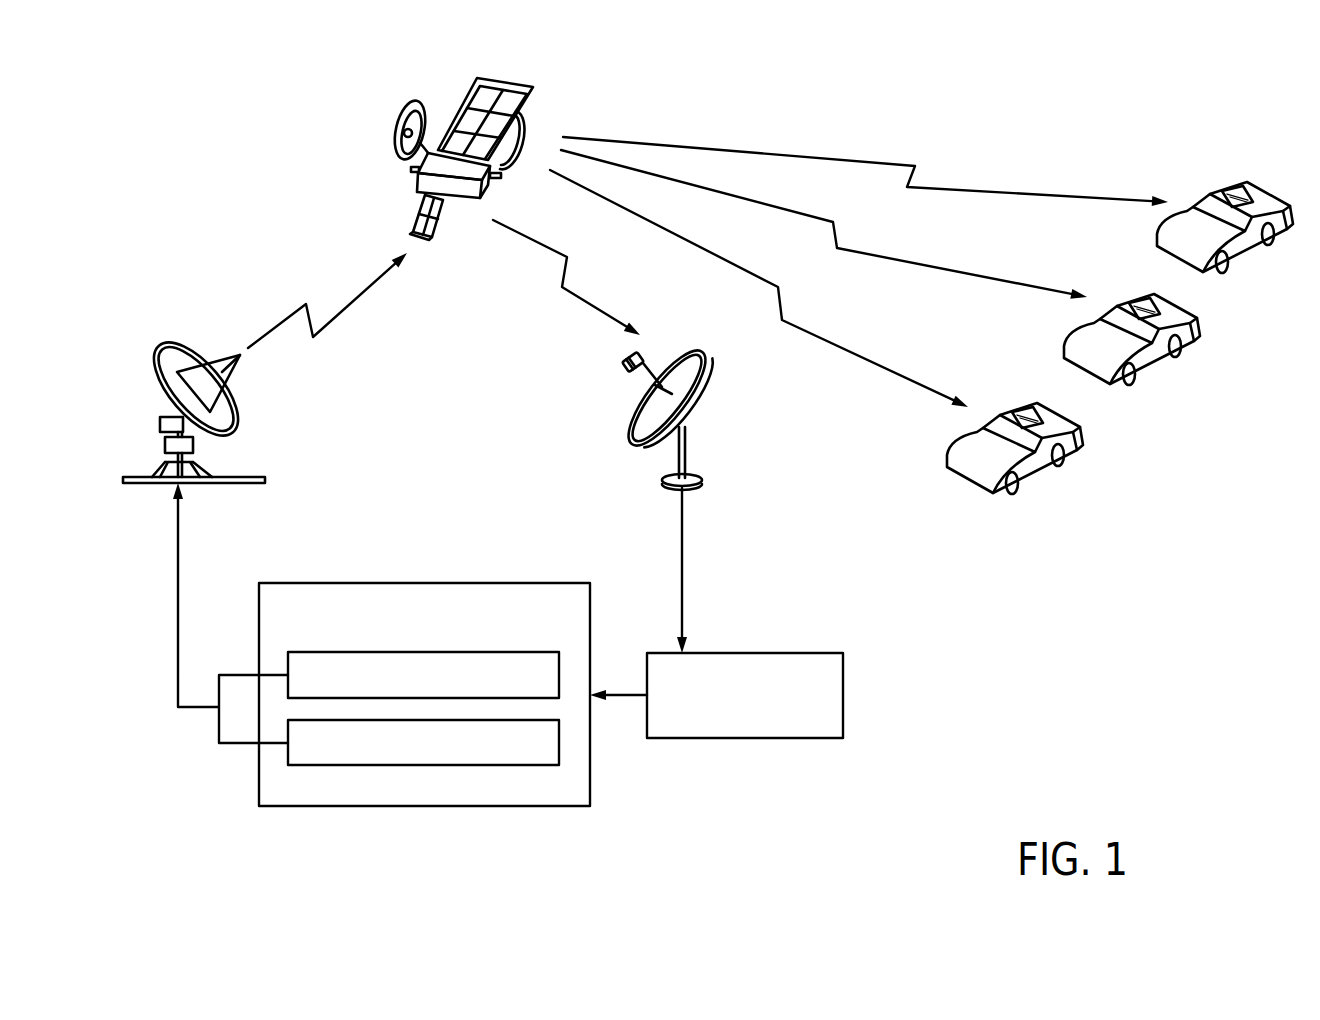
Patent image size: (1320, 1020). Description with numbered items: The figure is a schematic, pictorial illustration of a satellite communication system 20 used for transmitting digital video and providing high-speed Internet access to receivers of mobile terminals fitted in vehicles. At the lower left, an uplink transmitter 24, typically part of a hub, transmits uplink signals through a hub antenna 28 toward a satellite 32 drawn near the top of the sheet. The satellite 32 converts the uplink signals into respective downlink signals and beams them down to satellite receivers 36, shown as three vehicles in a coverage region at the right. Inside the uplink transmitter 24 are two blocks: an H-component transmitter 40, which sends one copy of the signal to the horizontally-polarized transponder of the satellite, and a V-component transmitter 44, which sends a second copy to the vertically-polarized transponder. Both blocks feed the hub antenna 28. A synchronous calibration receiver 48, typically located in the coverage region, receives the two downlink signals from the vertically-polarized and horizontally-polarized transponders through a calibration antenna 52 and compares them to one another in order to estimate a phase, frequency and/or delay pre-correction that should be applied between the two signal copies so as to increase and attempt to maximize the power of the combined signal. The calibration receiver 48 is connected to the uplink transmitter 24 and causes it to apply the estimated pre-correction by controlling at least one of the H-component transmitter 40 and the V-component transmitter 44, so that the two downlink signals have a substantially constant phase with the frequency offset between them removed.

The satellite communication system 20 is at (246, 162).
The uplink transmitter 24 is at (427, 808).
The hub antenna 28 is at (233, 410).
The satellite 32 is at (398, 140).
The satellite receivers 36 is at (1222, 186).
The H-component transmitter 40 is at (559, 742).
The V-component transmitter 44 is at (559, 661).
The synchronous calibration receiver 48 is at (748, 740).
The calibration antenna 52 is at (630, 428).